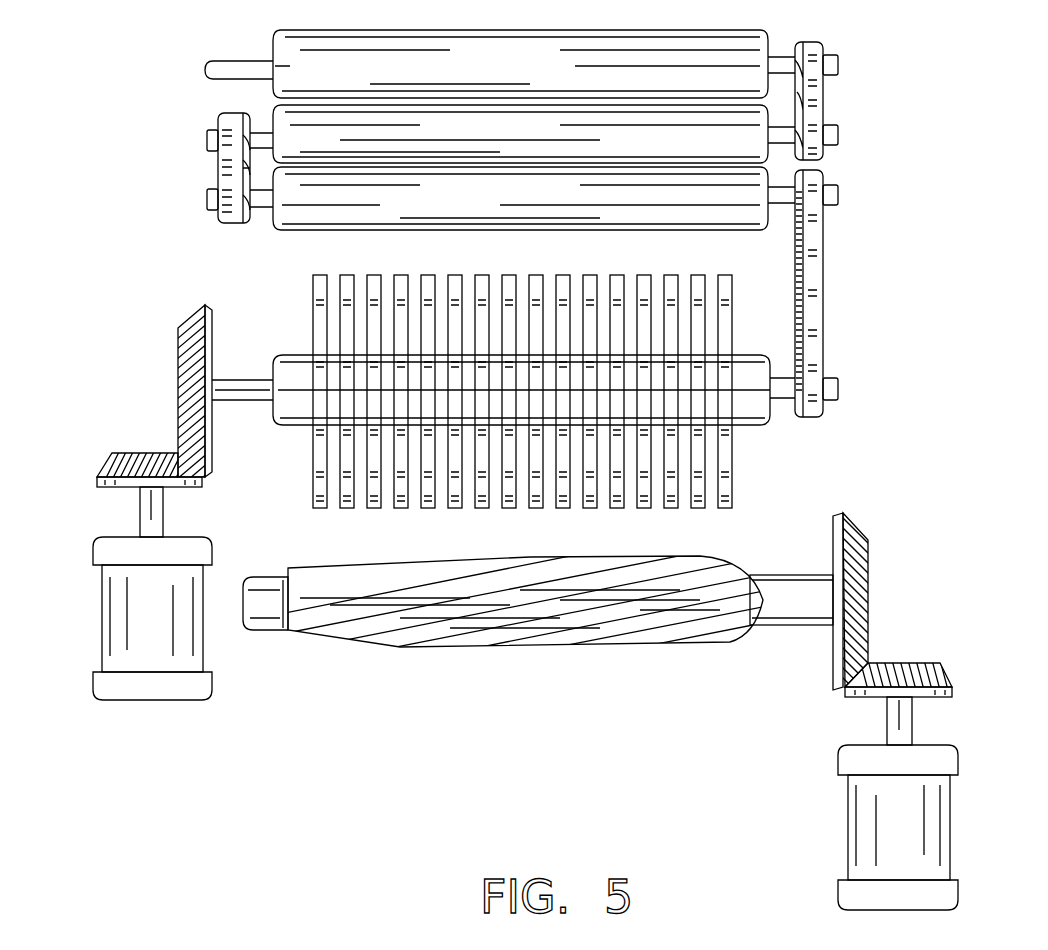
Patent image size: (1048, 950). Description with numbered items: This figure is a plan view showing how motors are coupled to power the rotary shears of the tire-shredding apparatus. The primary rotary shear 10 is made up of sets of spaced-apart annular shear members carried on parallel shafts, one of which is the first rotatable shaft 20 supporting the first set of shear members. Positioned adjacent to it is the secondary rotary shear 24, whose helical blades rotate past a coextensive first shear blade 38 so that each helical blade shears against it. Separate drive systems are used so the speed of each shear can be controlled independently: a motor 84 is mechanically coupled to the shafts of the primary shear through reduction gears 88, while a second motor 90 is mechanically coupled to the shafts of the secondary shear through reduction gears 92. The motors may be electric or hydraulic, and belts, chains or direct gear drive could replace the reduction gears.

The primary rotary shear 10 is at (289, 283).
The first rotatable shaft 20 is at (287, 412).
The secondary rotary shear 24 is at (381, 689).
The first shear blade 38 is at (796, 575).
The motor 84 is at (102, 620).
The reduction gears 88 is at (129, 405).
The motor 90 is at (950, 825).
The reduction gears 92 is at (909, 620).